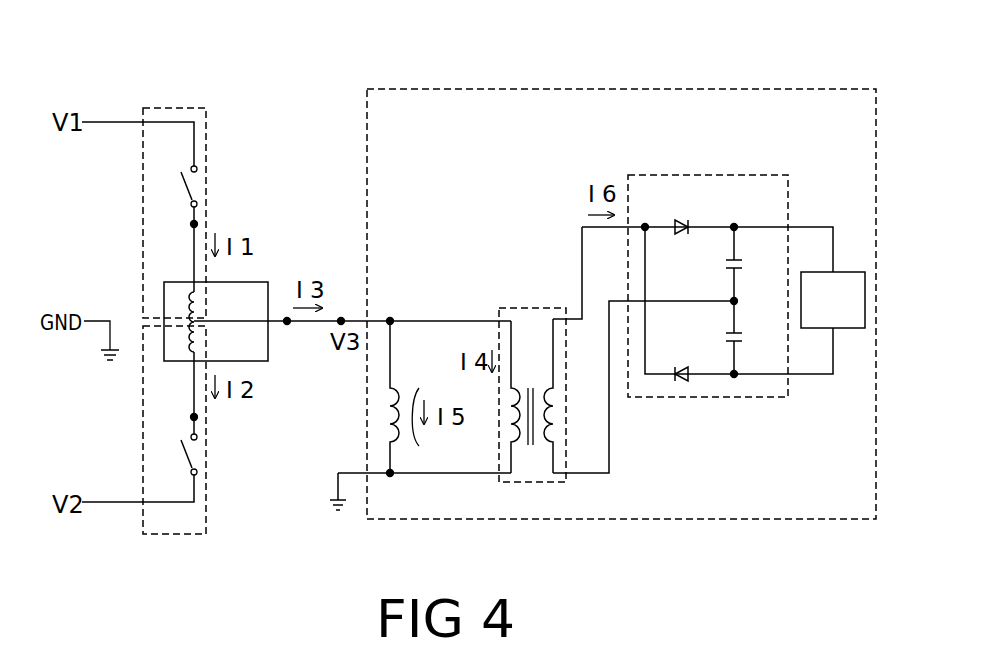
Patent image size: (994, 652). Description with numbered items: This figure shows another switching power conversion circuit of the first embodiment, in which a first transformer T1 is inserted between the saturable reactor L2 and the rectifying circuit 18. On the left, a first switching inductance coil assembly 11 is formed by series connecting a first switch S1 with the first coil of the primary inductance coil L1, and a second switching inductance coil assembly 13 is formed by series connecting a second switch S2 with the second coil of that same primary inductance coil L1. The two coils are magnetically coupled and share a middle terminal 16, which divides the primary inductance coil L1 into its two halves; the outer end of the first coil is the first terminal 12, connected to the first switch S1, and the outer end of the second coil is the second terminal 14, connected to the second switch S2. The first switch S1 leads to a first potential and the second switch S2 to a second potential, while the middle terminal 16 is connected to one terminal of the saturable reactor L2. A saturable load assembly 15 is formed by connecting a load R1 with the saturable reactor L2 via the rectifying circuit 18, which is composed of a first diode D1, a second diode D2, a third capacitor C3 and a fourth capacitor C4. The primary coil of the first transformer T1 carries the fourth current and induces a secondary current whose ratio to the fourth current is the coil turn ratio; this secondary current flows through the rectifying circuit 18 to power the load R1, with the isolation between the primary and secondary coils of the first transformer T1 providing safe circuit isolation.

The first switching inductance coil assembly 11 is at (206, 108).
The first terminal 12 is at (197, 223).
The second switching inductance coil assembly 13 is at (206, 516).
The second terminal 14 is at (197, 418).
The saturable load assembly 15 is at (848, 80).
The middle terminal 16 is at (288, 318).
The rectifying circuit 18 is at (707, 248).
The first switch S1 is at (175, 174).
The second switch S2 is at (176, 441).
The primary inductance coil L1 is at (216, 336).
The saturable reactor L2 is at (409, 397).
The first transformer T1 is at (532, 308).
The first diode D1 is at (688, 210).
The second diode D2 is at (691, 357).
The third capacitor C3 is at (755, 264).
The fourth capacitor C4 is at (756, 337).
The load R1 is at (857, 300).